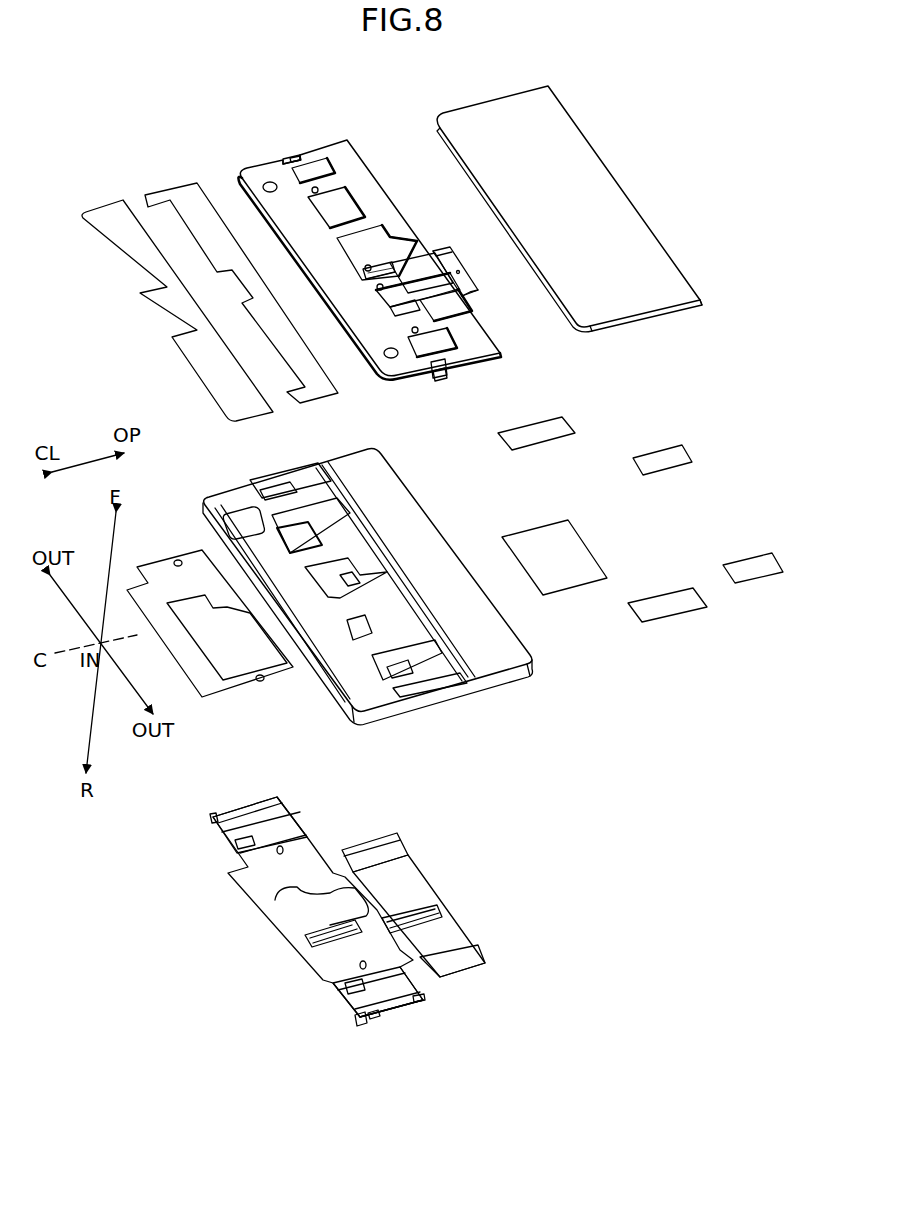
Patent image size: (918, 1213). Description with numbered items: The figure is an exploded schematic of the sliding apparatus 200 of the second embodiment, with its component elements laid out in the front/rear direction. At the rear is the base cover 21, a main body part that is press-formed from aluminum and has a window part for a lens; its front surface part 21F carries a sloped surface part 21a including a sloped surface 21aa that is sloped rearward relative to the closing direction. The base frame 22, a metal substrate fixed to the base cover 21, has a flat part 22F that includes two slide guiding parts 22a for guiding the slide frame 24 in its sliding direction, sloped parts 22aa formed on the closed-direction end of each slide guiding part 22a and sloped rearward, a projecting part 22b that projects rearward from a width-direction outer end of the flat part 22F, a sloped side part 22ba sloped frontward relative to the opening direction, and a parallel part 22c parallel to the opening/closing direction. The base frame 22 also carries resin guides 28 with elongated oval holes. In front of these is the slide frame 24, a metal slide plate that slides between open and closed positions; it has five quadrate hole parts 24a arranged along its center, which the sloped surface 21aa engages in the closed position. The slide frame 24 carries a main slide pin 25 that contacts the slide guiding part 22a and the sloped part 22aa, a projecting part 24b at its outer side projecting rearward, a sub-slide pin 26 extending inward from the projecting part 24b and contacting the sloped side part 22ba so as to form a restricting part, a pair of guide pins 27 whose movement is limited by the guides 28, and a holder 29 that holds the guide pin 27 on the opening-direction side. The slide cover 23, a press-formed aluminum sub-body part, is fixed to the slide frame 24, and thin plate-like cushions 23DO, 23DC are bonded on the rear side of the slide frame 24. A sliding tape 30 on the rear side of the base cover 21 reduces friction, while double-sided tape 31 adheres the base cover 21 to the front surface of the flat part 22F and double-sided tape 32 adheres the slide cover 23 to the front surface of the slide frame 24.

The sliding apparatus 200 is at (328, 114).
The slide cover 23 is at (522, 90).
The cushion 23DO is at (104, 205).
The cushion 23DC is at (172, 190).
The slide frame 24 is at (350, 138).
The hole part 24a is at (337, 165).
The projecting part 24b is at (293, 158).
The main slide pin 25 is at (312, 195).
The sub-slide pin 26 is at (432, 380).
The guide pin 27 is at (440, 268).
The holder 29 is at (438, 252).
The base cover 21 is at (395, 453).
The front surface part 21F is at (215, 500).
The sloped surface part 21a is at (398, 670).
The sloped surface 21aa is at (258, 535).
The sliding tape 30 is at (530, 528).
The double-sided tape 31 is at (155, 560).
The double-sided tape 32 is at (746, 570).
The base frame 22 is at (400, 832).
The flat part 22F is at (268, 910).
The slide guiding part 22a is at (295, 835).
The sloped part 22aa is at (238, 843).
The projecting part 22b is at (213, 814).
The sloped side part 22ba is at (376, 1017).
The parallel part 22c is at (414, 1003).
The guide 28 is at (425, 915).